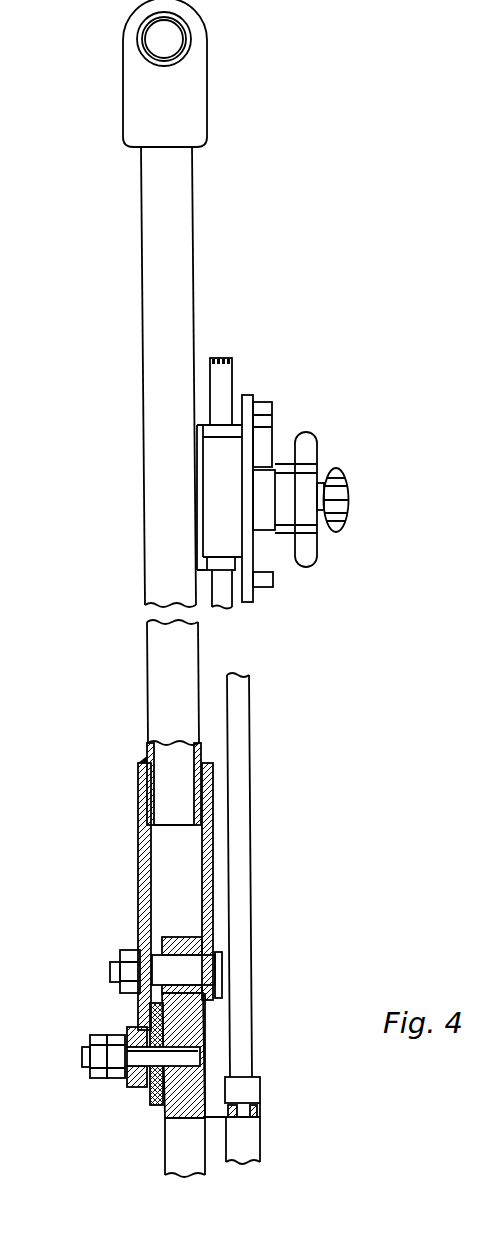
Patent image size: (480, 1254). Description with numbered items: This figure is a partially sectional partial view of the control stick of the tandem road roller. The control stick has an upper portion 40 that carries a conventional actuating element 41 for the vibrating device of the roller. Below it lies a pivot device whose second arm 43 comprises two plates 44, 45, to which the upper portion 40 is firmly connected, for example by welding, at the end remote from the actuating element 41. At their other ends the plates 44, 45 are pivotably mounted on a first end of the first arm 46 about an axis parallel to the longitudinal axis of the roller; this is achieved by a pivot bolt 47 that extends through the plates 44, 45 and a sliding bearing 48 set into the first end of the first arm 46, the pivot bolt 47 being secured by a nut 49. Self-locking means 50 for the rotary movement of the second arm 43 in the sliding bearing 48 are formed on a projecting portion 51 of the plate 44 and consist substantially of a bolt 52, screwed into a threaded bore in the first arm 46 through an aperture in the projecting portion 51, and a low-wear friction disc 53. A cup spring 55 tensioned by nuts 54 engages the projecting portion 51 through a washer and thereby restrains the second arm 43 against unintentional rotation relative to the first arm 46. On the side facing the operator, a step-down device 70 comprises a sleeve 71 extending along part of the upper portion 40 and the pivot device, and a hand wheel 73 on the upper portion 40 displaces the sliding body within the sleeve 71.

The upper portion 40 is at (160, 530).
The actuating element 41 is at (178, 40).
The second arm 43 is at (161, 954).
The plate 44 is at (143, 860).
The plate 45 is at (205, 880).
The first arm 46 is at (256, 1077).
The pivot bolt 47 is at (165, 970).
The sliding bearing 48 is at (200, 940).
The nut 49 is at (118, 958).
The self-locking means 50 is at (116, 1078).
The projecting portion 51 is at (147, 1103).
The bolt 52 is at (82, 1056).
The friction disc 53 is at (200, 1033).
The nuts 54 is at (113, 1072).
The cup spring 55 is at (127, 1038).
The step-down device 70 is at (280, 1110).
The sleeve 71 is at (252, 1142).
The hand wheel 73 is at (263, 485).